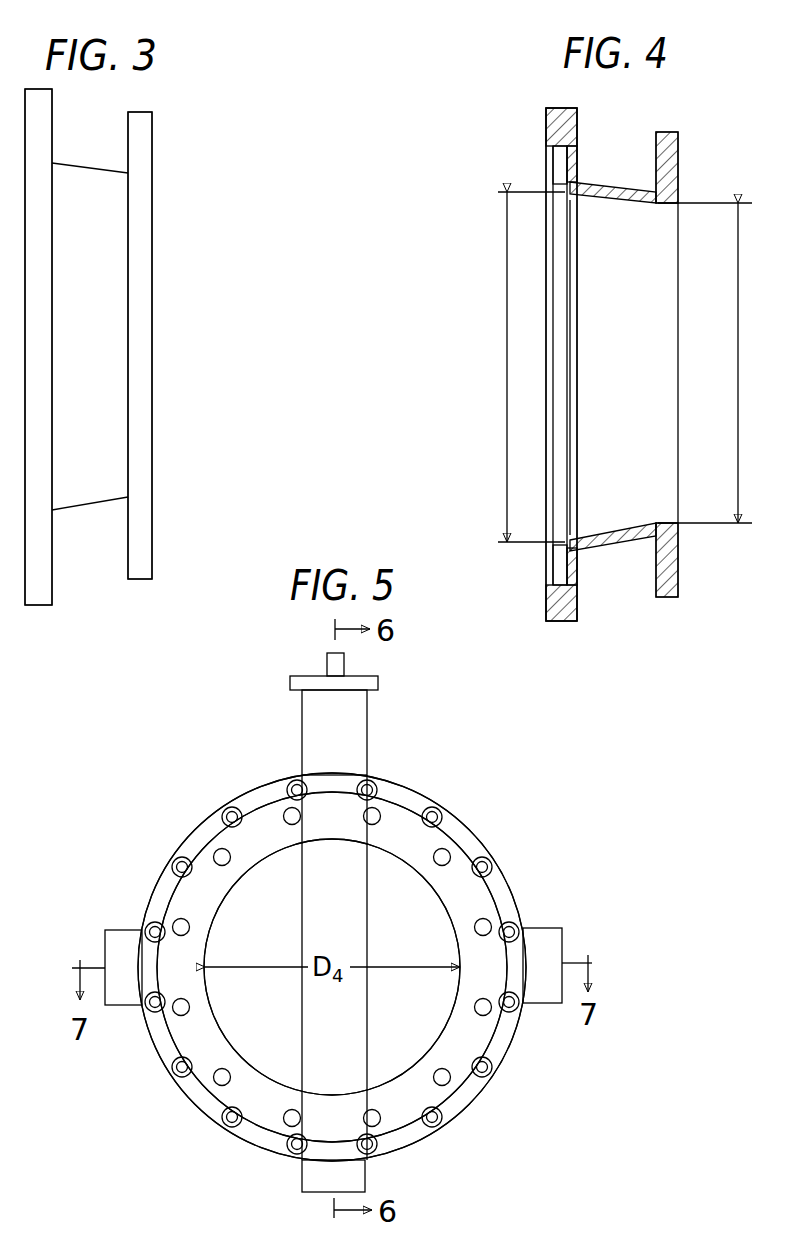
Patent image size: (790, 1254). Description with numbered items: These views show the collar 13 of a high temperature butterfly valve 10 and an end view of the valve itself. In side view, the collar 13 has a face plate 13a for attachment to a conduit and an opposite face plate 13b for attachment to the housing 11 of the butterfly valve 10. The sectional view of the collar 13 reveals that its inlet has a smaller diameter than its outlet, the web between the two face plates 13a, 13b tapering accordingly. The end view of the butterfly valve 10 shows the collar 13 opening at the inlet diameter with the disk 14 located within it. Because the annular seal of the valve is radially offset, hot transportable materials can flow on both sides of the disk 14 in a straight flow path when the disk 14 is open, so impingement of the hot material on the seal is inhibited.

In FIG. 5, the butterfly valve 10 is at (430, 722).
In FIG. 5, the housing 11 is at (322, 743).
In FIG. 3, the collar 13 is at (152, 136).
In FIG. 4, the collar 13 is at (707, 170).
In FIG. 5, the collar 13 is at (463, 833).
In FIG. 3, the face plate 13a is at (143, 560).
In FIG. 4, the face plate 13a is at (680, 585).
In FIG. 5, the face plate 13a is at (483, 903).
In FIG. 3, the face plate 13b is at (40, 575).
In FIG. 4, the face plate 13b is at (578, 600).
In FIG. 5, the face plate 13b is at (425, 795).
In FIG. 5, the disk 14 is at (348, 905).